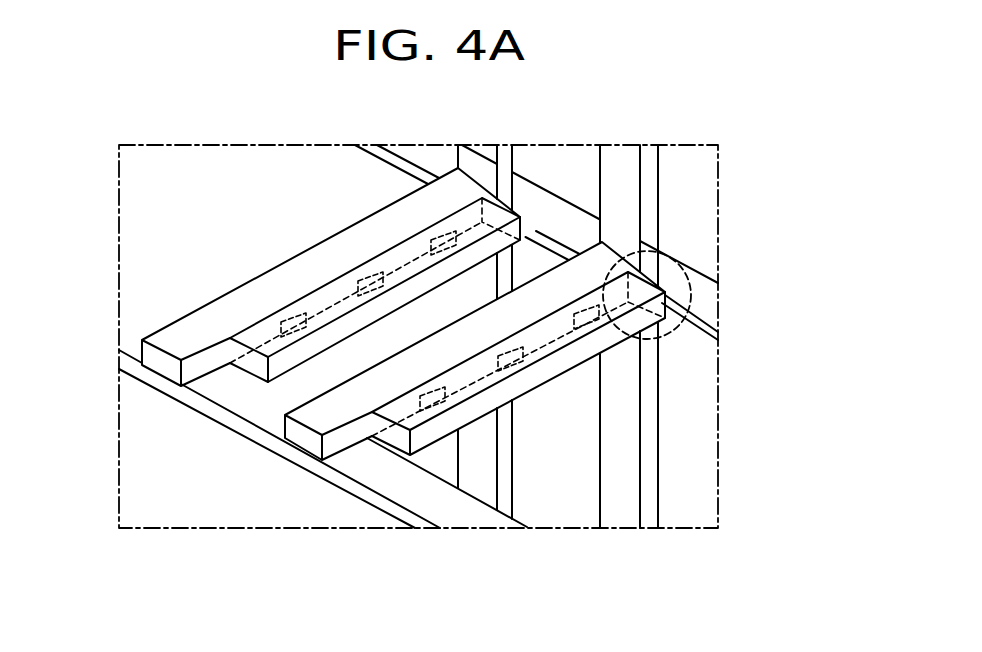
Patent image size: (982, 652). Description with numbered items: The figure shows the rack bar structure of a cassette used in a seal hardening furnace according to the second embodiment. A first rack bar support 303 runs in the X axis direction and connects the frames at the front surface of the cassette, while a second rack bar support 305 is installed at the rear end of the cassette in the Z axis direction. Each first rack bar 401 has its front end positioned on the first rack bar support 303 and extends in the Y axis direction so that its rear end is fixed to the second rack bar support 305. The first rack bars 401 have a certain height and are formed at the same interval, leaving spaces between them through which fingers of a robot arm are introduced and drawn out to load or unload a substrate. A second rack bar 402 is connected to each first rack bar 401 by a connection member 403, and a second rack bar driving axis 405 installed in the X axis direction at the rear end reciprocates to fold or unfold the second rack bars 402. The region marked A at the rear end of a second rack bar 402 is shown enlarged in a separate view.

The first rack bar support 303 is at (216, 397).
The second rack bar support 305 is at (628, 445).
The first rack bar 401 is at (303, 443).
The second rack bar 402 is at (393, 440).
The connection member 403 is at (442, 407).
The second rack bar driving axis 405 is at (692, 310).
The A region A is at (670, 254).